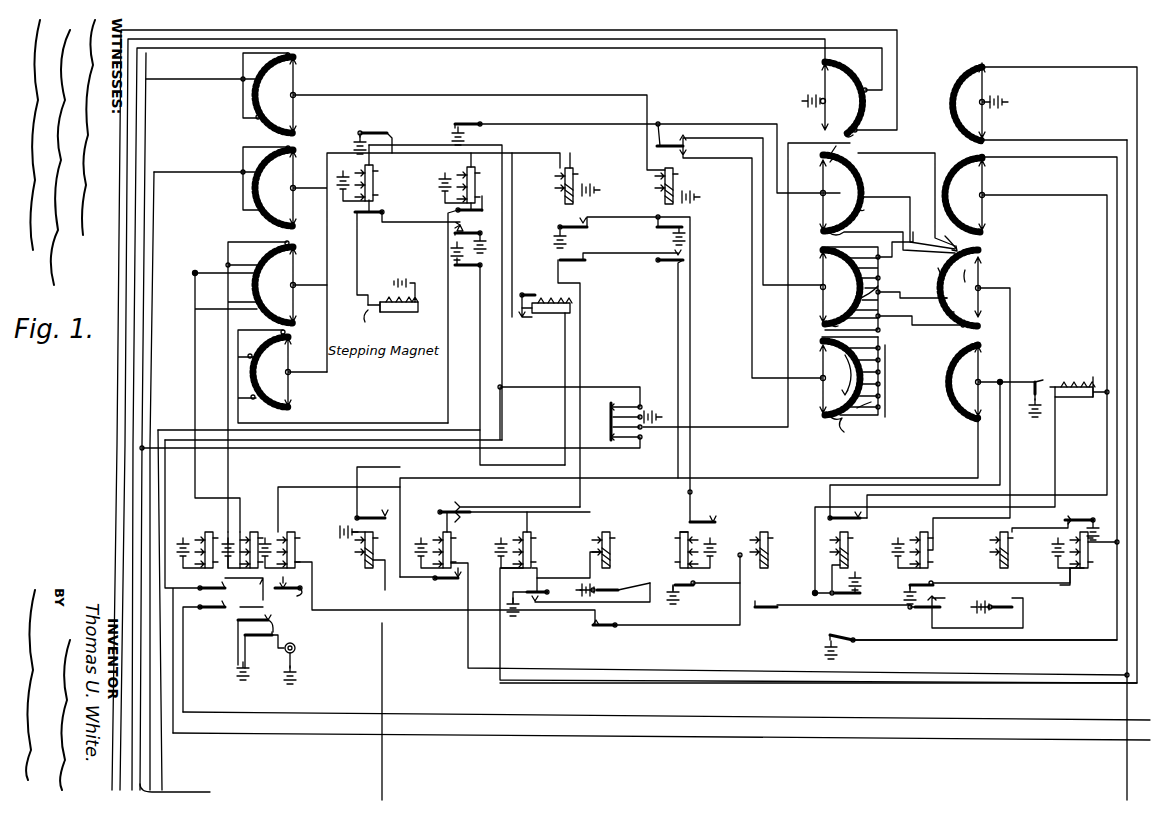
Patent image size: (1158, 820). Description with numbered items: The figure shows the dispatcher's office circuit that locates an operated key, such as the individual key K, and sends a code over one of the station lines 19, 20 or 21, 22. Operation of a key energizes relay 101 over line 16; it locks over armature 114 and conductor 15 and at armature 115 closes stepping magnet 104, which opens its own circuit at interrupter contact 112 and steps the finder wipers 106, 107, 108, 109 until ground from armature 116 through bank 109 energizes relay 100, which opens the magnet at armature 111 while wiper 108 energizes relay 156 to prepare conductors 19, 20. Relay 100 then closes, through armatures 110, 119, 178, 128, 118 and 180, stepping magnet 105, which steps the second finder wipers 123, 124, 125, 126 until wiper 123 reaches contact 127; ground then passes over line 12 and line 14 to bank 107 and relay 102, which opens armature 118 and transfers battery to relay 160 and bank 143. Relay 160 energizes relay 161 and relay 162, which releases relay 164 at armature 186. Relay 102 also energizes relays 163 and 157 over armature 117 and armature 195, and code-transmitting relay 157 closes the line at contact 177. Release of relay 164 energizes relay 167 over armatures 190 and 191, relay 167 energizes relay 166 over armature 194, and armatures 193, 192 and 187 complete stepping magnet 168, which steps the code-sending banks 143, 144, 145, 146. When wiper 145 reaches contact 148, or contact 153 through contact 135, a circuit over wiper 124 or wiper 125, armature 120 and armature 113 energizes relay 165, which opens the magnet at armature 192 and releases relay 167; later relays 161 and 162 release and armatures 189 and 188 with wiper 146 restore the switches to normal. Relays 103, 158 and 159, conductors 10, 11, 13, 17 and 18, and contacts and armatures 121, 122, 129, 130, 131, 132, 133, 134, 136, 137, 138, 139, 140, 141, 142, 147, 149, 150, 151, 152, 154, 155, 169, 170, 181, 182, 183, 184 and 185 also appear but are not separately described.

The conductor 10 is at (113, 741).
The conductor 11 is at (121, 755).
The line 12 is at (132, 777).
The conductor 13 is at (183, 782).
The line 14 is at (145, 754).
The conductor 15 is at (150, 770).
The line 16 is at (160, 782).
The conductor 17 is at (382, 787).
The conductor 18 is at (1126, 790).
The line 19 is at (1130, 719).
The line 20 is at (1143, 741).
The line 21 is at (226, 630).
The line 22 is at (228, 648).
The relay 100 is at (378, 196).
The relay 101 is at (478, 185).
The relay 102 is at (576, 172).
The relay 103 is at (684, 186).
The stepping magnet 104 is at (397, 284).
The stepping magnet 105 is at (556, 320).
The finder switch 106 is at (405, 111).
The bank 107 is at (357, 259).
The wiper 108 is at (260, 386).
The bank 109 is at (290, 339).
The armature 110 is at (381, 131).
The armature 111 is at (362, 235).
The interrupter contact 112 is at (365, 321).
The armature 113 is at (477, 125).
The armature 114 is at (457, 208).
The armature 115 is at (472, 238).
The armature 116 is at (504, 353).
The armature 117 is at (564, 220).
The armature 118 is at (562, 254).
The armature 119 is at (530, 293).
The armature 120 is at (668, 130).
The contact 121 is at (655, 233).
The contact 122 is at (658, 273).
The finder switch wiper 123 is at (801, 91).
The finder switch wiper 124 is at (816, 185).
The finder switch wiper 125 is at (821, 285).
The finder switch wiper 126 is at (809, 369).
The contact 127 is at (830, 72).
The armature 128 is at (863, 88).
The contact 129 is at (852, 134).
The conductor 130 is at (766, 281).
The contact 131 is at (816, 155).
The contact bank 132 is at (862, 196).
The contact 133 is at (860, 210).
The contact 134 is at (891, 238).
The contact 135 is at (814, 243).
The contact bank 136 is at (890, 282).
The contact 137 is at (882, 291).
The contact 138 is at (815, 322).
The contact 139 is at (822, 343).
The contact bank 140 is at (879, 362).
The contact 141 is at (871, 402).
The contact 142 is at (850, 428).
The code-sending switch bank 143 is at (984, 96).
The code-sending switch bank 144 is at (988, 182).
The code-sending switch wiper 145 is at (984, 286).
The code-sending switch wiper 146 is at (980, 380).
The conductor 147 is at (984, 140).
The contact 148 is at (977, 256).
The conductor 149 is at (940, 235).
The contact bank 150 is at (960, 273).
The contact 151 is at (927, 269).
The contact 152 is at (929, 290).
The contact 153 is at (932, 313).
The contact 154 is at (960, 328).
The contact 155 is at (968, 325).
The relay 156 is at (206, 532).
The code transmitting relay 157 is at (297, 536).
The relay 158 is at (363, 564).
The relay 159 is at (456, 546).
The relay 160 is at (534, 549).
The relay 161 is at (597, 557).
The relay 162 is at (676, 546).
The relay 163 is at (768, 548).
The relay 164 is at (850, 569).
The relay 165 is at (923, 544).
The relay 166 is at (994, 570).
The relay 167 is at (1071, 548).
The stepping magnet 168 is at (1073, 387).
The contact 169 is at (195, 586).
The contact 170 is at (218, 651).
The contact 177 is at (266, 584).
The armature 178 is at (367, 518).
The armature 180 is at (440, 512).
The contact 181 is at (447, 582).
The contact 182 is at (532, 598).
The contact 183 is at (610, 590).
The contact 184 is at (667, 590).
The contact 185 is at (690, 516).
The armature 186 is at (682, 586).
The armature 187 is at (761, 620).
The armature 188 is at (842, 524).
The armature 189 is at (857, 592).
The armature 190 is at (840, 636).
The armature 191 is at (927, 585).
The armature 192 is at (922, 608).
The armature 193 is at (991, 600).
The armature 194 is at (1070, 520).
The armature 195 is at (1056, 381).
The individual key K is at (642, 402).